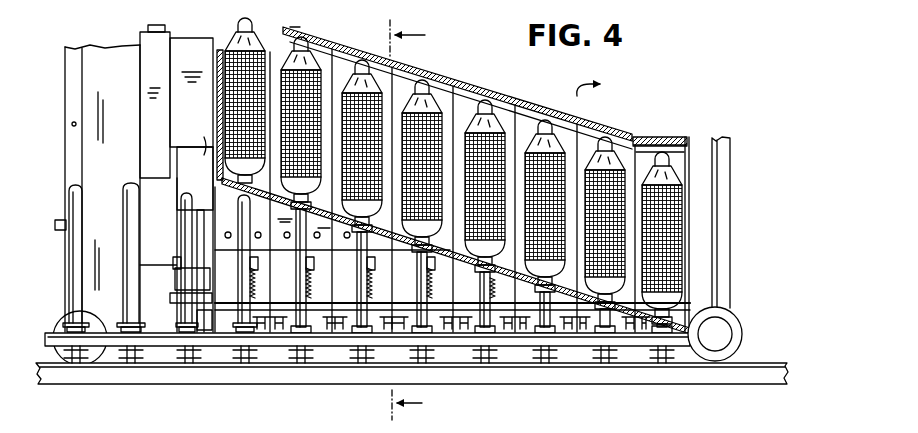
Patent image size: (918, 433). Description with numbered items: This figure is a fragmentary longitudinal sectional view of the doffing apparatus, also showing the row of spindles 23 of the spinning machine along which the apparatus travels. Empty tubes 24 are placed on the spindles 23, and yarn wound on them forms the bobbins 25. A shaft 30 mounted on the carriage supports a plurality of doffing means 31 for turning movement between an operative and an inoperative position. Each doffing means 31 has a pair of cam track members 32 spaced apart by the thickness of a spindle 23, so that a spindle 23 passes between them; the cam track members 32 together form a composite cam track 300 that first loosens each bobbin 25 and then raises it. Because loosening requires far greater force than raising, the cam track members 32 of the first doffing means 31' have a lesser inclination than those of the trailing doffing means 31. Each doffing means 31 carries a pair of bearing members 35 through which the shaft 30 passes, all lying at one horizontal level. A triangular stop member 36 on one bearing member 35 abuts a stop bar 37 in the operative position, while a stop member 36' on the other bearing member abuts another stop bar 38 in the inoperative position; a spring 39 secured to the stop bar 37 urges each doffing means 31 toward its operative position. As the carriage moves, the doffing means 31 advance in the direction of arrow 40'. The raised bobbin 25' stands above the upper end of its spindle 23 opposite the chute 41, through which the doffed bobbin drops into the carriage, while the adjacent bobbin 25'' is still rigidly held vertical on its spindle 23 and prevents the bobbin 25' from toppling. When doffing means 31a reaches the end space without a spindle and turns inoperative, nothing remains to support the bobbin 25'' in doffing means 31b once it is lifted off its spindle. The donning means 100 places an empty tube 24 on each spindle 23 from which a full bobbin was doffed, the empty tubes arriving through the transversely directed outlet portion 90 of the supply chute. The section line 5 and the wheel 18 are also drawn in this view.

The outlet portion of chute 90 is at (140, 44).
The chute 41 is at (219, 50).
The donning means 100 is at (195, 178).
The spindle 23 is at (237, 208).
The empty tube 24 is at (124, 220).
The bobbin 25 is at (681, 212).
The last bobbin 25' is at (259, 97).
The trailing bobbin 25'' is at (331, 110).
The doffing means 31 is at (457, 84).
The doffing means 31a is at (388, 50).
The doffing means 31b is at (303, 35).
The first doffing means 31' is at (661, 130).
The cam track member 32 is at (307, 208).
The composite cam track 300 is at (446, 262).
The arrow 40' is at (590, 98).
The section line 5- 5 is at (415, 220).
The stop bar 37 is at (288, 346).
The spring 39 is at (322, 334).
The bearing member 35 is at (391, 334).
The stop bar 38 is at (471, 334).
The shaft 30 is at (532, 334).
The triangular stop member 36 is at (637, 365).
The stop member 36' is at (582, 365).
The wheel 18 is at (736, 328).